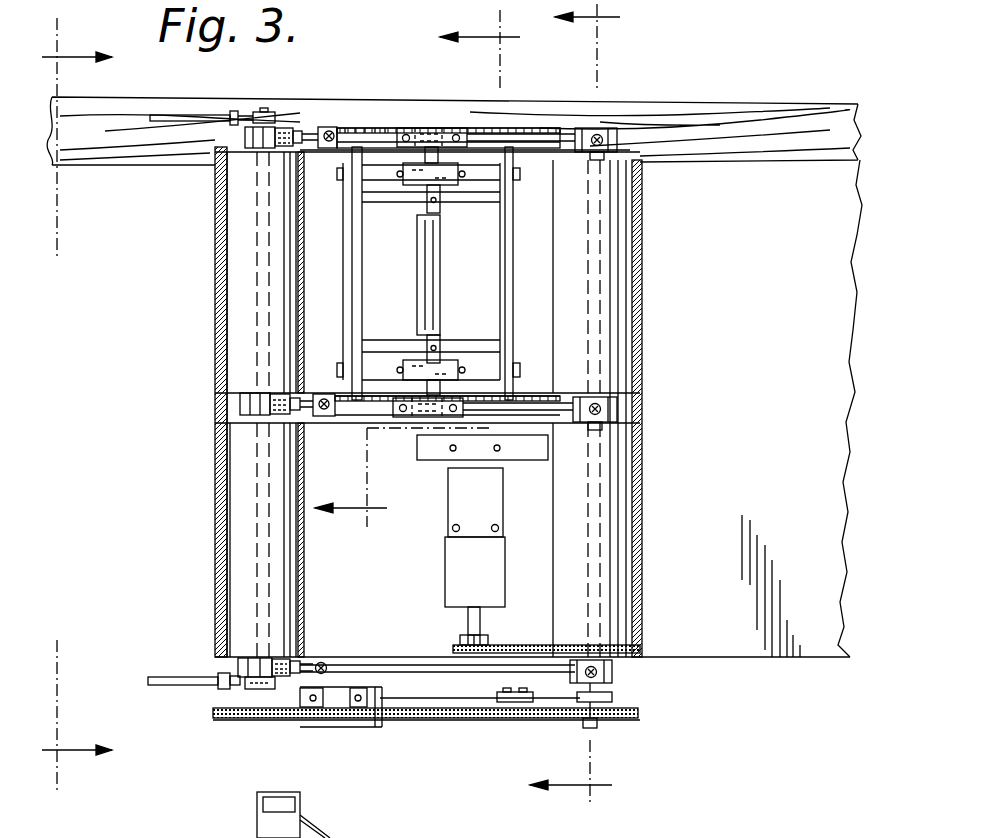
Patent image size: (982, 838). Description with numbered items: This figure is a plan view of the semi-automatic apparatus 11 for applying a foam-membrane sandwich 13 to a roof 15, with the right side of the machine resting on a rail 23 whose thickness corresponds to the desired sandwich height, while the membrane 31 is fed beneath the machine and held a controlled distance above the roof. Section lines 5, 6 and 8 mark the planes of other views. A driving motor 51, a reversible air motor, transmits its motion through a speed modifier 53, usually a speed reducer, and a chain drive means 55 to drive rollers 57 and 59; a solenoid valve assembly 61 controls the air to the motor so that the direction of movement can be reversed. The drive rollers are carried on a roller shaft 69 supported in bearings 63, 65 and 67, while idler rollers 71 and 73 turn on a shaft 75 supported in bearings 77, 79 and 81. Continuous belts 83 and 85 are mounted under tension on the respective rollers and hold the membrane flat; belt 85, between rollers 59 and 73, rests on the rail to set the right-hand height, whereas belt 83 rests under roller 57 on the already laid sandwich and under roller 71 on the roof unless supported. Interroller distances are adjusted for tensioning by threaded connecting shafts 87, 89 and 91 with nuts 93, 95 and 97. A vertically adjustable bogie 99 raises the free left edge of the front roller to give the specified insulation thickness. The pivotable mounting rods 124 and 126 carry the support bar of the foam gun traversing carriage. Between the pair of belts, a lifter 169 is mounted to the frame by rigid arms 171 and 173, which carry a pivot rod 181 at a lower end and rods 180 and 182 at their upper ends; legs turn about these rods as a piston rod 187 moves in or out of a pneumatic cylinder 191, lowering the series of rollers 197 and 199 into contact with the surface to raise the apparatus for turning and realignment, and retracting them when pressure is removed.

The section line 5- 5 is at (77, 404).
The section line 6- 6 is at (585, 403).
The section line 8- 8 is at (417, 275).
The semi-automatic apparatus 11 is at (232, 835).
The foam-membrane sandwich 13 is at (786, 660).
The roof 15 is at (160, 206).
The rail 23 is at (757, 84).
The membrane 31 is at (215, 248).
The driving motor 51 is at (462, 489).
The speed modifier 53 is at (460, 580).
The drive means 55 is at (533, 628).
The drive roller 57 is at (643, 522).
The drive roller 59 is at (643, 300).
The solenoid valve assembly 61 is at (420, 448).
The bearing 63 is at (612, 675).
The bearing 65 is at (620, 408).
The bearing 67 is at (622, 128).
The roller shaft 69 is at (605, 250).
The idler roller 71 is at (235, 595).
The idler roller 73 is at (215, 285).
The shaft 75 is at (258, 512).
The bearing 77 is at (240, 665).
The bearing 79 is at (240, 405).
The bearing 81 is at (290, 127).
The continuous belt 83 is at (220, 555).
The continuous belt 85 is at (228, 318).
The threaded connecting shaft 87 is at (458, 676).
The threaded connecting shaft 89 is at (300, 423).
The threaded connecting shaft 91 is at (347, 127).
The nut 93 is at (293, 695).
The nut 95 is at (305, 410).
The nut 97 is at (322, 127).
The vertically adjustable bogie 99 is at (425, 727).
The pivotable mounting rod 124 is at (157, 680).
The pivotable mounting rod 126 is at (183, 113).
The lifter 169 is at (422, 128).
The rigid arm 171 is at (440, 358).
The rigid arm 173 is at (440, 128).
The rod 180 is at (390, 352).
The pivot rod 181 is at (420, 200).
The rod 182 is at (460, 205).
The piston rod 187 is at (500, 222).
The pneumatic cylinder 191 is at (440, 228).
The rollers 197 is at (540, 393).
The rollers 199 is at (383, 127).